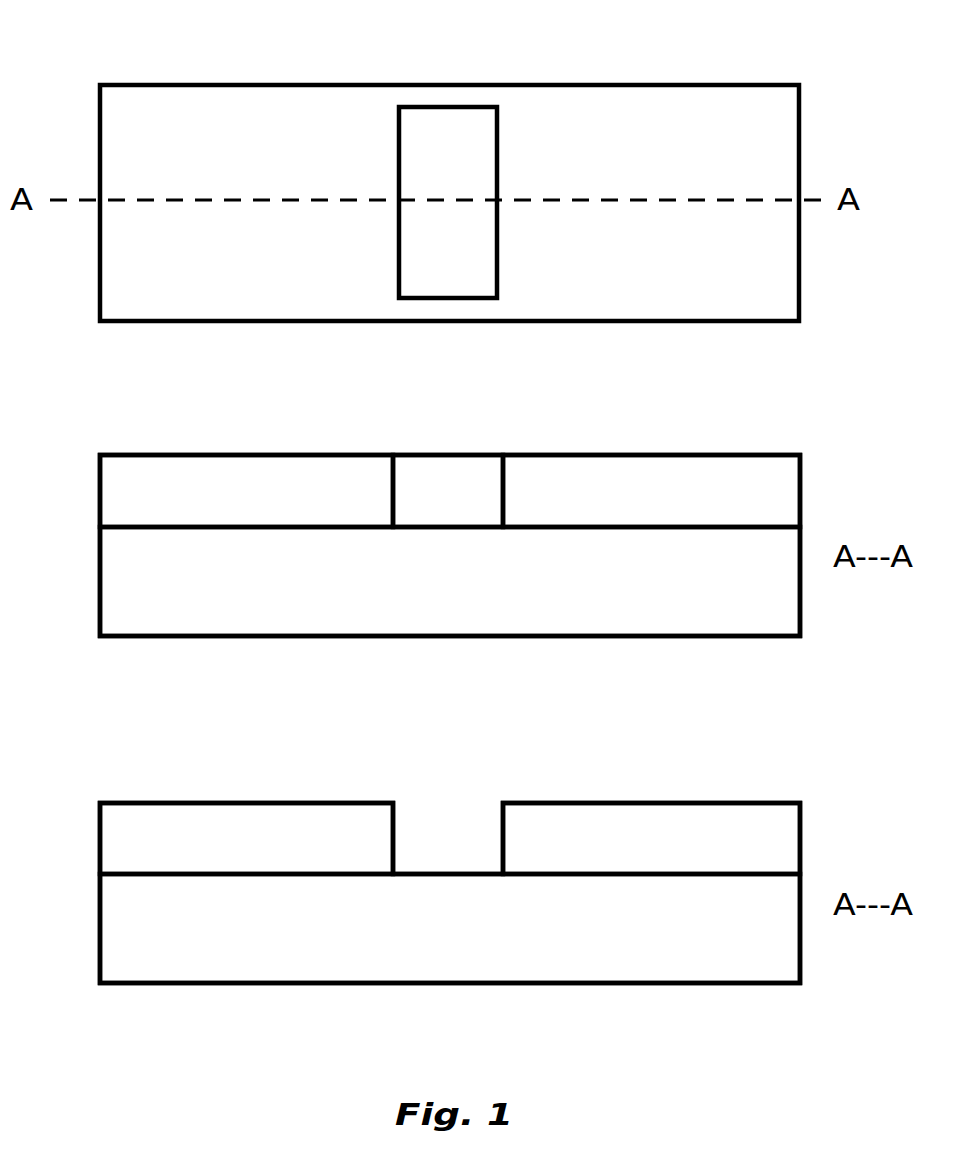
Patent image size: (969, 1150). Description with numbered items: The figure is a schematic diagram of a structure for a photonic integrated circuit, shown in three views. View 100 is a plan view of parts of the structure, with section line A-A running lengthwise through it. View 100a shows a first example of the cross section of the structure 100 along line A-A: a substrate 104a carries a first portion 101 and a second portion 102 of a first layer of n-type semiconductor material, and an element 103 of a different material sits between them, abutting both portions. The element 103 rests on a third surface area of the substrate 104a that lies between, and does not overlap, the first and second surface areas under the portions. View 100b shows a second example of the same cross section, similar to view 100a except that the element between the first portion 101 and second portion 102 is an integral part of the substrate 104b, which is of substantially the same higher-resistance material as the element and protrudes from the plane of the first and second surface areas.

The plan view of structure 100 is at (478, 39).
The first example cross-section view 100a is at (485, 435).
The second example cross-section view 100b is at (485, 791).
The first portion of first layer 101 is at (246, 512).
The second portion of first layer 102 is at (651, 513).
The element 103 is at (448, 317).
The substrate 104a is at (450, 581).
The substrate 104b is at (450, 594).